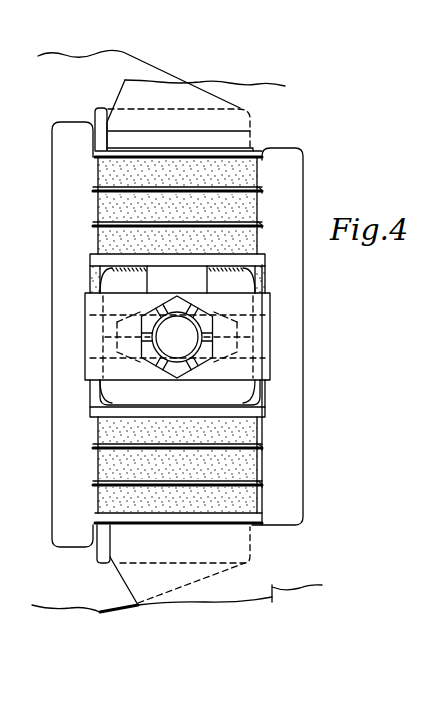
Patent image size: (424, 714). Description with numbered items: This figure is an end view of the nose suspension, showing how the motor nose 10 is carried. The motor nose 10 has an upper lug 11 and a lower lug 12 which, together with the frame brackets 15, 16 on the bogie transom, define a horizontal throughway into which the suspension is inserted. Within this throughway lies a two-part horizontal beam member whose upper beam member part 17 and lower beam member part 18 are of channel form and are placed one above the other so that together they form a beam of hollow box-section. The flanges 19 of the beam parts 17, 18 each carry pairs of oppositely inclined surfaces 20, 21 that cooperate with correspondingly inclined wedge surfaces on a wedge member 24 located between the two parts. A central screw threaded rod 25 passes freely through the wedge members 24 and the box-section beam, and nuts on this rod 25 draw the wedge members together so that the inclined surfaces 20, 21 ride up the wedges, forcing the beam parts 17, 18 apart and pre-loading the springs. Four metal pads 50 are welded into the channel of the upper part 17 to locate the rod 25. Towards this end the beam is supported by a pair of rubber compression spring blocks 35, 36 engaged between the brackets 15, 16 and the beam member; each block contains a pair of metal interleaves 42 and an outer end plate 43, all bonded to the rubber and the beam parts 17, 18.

The motor nose 10 is at (44, 177).
The upper lug 11 is at (102, 112).
The lower lug 12 is at (100, 537).
The bracket 15 is at (283, 100).
The bracket 16 is at (272, 602).
The upper beam member part 17 is at (198, 258).
The lower beam member part 18 is at (147, 412).
The flange 19 is at (86, 280).
The inclined surface 20 is at (92, 272).
The inclined surface 21 is at (85, 303).
The wedge member 24 is at (141, 367).
The central screw threaded rod 25 is at (178, 350).
The rubber compression spring block 35 is at (225, 177).
The rubber compression spring block 36 is at (220, 468).
The metal interleaf 42 is at (258, 190).
The outer end plate 43 is at (262, 151).
The metal pad 50 is at (148, 280).